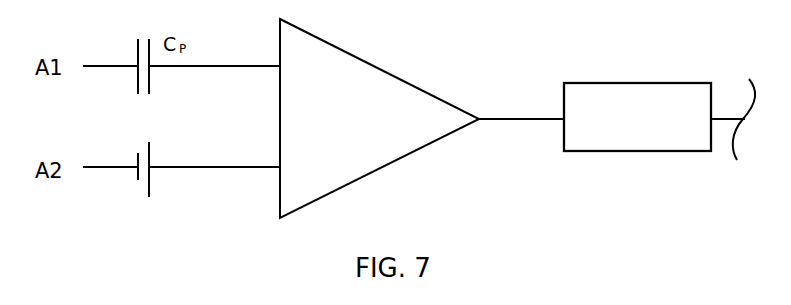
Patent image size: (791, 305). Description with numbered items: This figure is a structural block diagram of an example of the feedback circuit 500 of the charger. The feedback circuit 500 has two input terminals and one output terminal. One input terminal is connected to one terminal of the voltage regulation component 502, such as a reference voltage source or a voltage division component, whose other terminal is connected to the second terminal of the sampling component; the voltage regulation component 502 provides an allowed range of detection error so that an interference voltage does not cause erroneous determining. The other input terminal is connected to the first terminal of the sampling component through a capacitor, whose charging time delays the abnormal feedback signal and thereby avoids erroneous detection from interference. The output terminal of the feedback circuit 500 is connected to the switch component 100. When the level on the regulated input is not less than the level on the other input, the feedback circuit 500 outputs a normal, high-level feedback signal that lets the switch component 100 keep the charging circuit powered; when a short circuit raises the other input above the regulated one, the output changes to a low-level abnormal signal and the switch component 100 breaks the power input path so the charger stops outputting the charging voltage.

The switch component 100 is at (637, 117).
The feedback circuit 500 is at (379, 118).
The voltage regulation component 502 is at (151, 156).